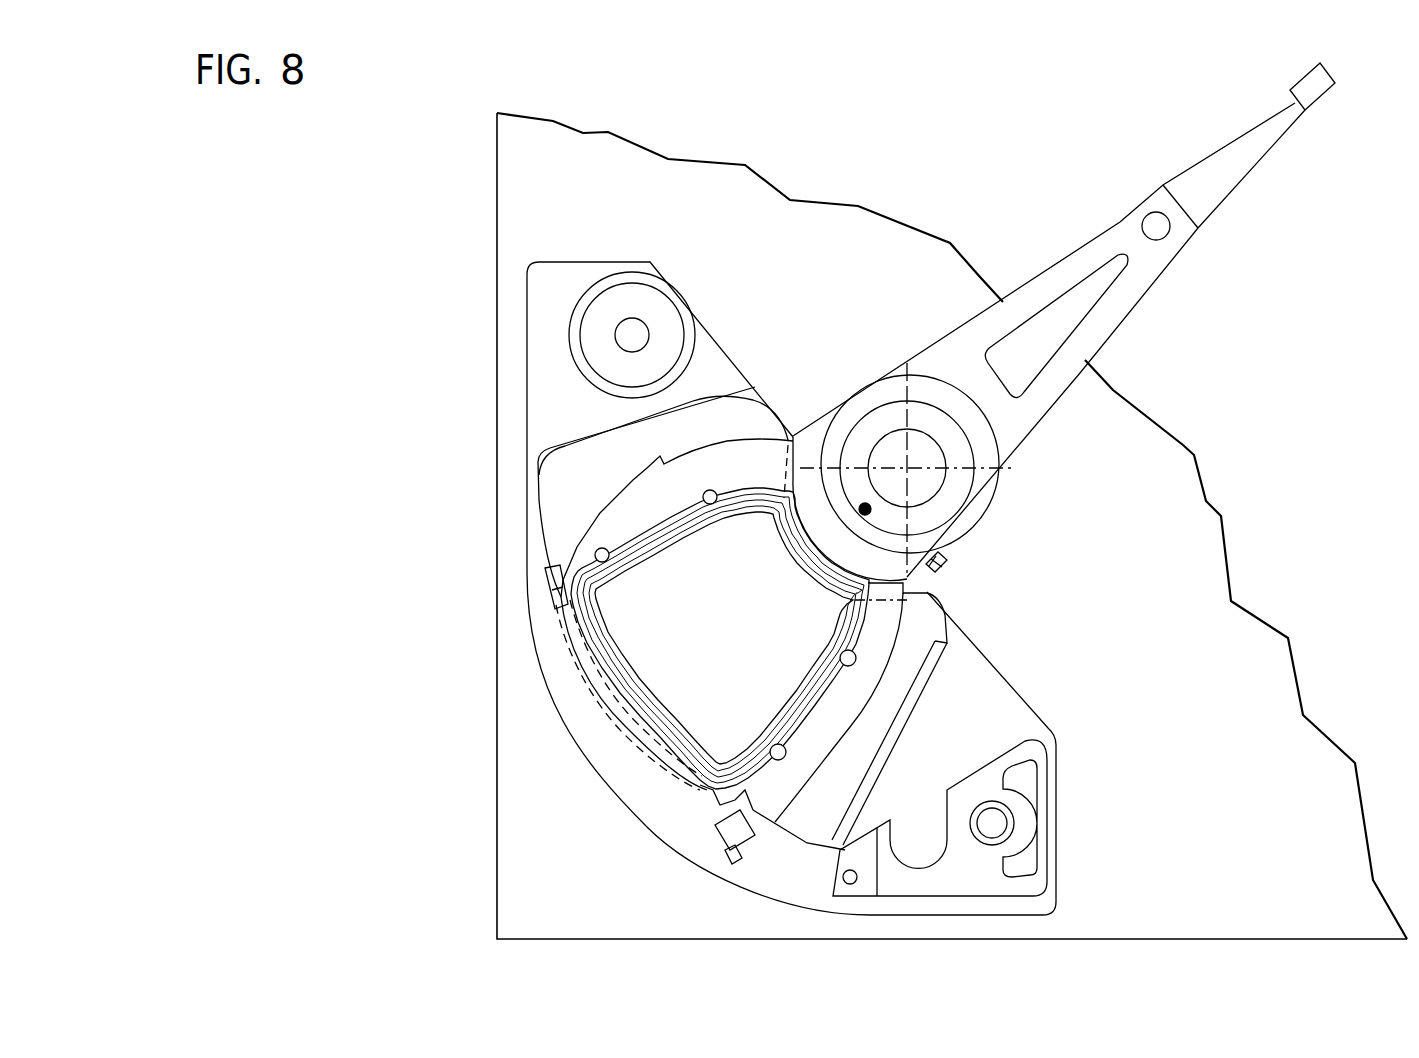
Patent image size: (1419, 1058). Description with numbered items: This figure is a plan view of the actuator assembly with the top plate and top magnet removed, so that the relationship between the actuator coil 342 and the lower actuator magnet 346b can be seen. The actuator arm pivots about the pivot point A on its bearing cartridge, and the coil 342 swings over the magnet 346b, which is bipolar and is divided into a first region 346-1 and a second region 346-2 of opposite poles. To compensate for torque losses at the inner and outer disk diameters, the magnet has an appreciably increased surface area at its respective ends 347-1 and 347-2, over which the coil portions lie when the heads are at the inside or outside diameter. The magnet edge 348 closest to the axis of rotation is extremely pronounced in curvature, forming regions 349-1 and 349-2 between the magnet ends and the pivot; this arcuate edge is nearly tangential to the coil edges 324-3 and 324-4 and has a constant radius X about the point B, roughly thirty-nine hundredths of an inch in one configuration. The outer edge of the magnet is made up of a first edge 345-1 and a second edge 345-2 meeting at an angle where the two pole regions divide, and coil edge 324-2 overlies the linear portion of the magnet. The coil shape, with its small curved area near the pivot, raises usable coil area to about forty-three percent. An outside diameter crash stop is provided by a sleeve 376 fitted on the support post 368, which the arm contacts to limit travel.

The sleeve 376 is at (660, 280).
The support post 368 is at (655, 327).
The magnet end 347-2 is at (677, 410).
The region 349-2 is at (753, 420).
The second region of magnet 346-2 is at (550, 537).
The second edge of outer edge 345-2 is at (568, 588).
The coil edge 324-2 is at (612, 593).
The coil edge 324-4 is at (835, 470).
The coil edge 324-3 is at (870, 607).
The magnet edge 348 is at (803, 593).
The region 349-1 is at (923, 660).
The second magnet 346b is at (917, 717).
The magnet end 347-1 is at (910, 750).
The first edge of outer edge 345-1 is at (656, 748).
The coil 342 is at (690, 783).
The first region of magnet 346-1 is at (815, 845).
The pivot point A is at (785, 474).
The center point B is at (867, 514).
The radius X is at (850, 509).